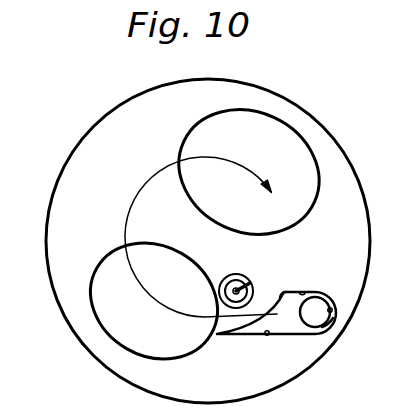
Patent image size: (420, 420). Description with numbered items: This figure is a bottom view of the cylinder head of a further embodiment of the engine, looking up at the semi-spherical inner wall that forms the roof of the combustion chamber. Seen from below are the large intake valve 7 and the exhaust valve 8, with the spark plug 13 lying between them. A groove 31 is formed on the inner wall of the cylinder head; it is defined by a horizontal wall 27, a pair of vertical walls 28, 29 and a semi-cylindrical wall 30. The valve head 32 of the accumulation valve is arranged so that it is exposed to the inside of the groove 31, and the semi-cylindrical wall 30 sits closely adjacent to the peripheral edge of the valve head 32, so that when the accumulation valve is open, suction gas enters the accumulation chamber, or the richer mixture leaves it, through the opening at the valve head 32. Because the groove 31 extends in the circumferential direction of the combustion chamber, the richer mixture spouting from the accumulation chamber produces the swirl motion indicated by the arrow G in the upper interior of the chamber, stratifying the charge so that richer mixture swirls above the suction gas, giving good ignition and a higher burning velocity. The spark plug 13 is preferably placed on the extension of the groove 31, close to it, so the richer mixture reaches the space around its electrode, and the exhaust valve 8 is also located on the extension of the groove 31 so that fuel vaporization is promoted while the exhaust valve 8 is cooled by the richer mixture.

The intake valve 7 is at (288, 147).
The exhaust valve 8 is at (118, 327).
The arrow indicating swirl motion G is at (159, 166).
The spark plug 13 is at (244, 277).
The horizontal wall 27 is at (292, 318).
The vertical wall 28 is at (268, 336).
The vertical wall 29 is at (303, 291).
The semi-cylindrical wall 30 is at (332, 309).
The groove 31 is at (281, 299).
The valve head 32 is at (326, 319).